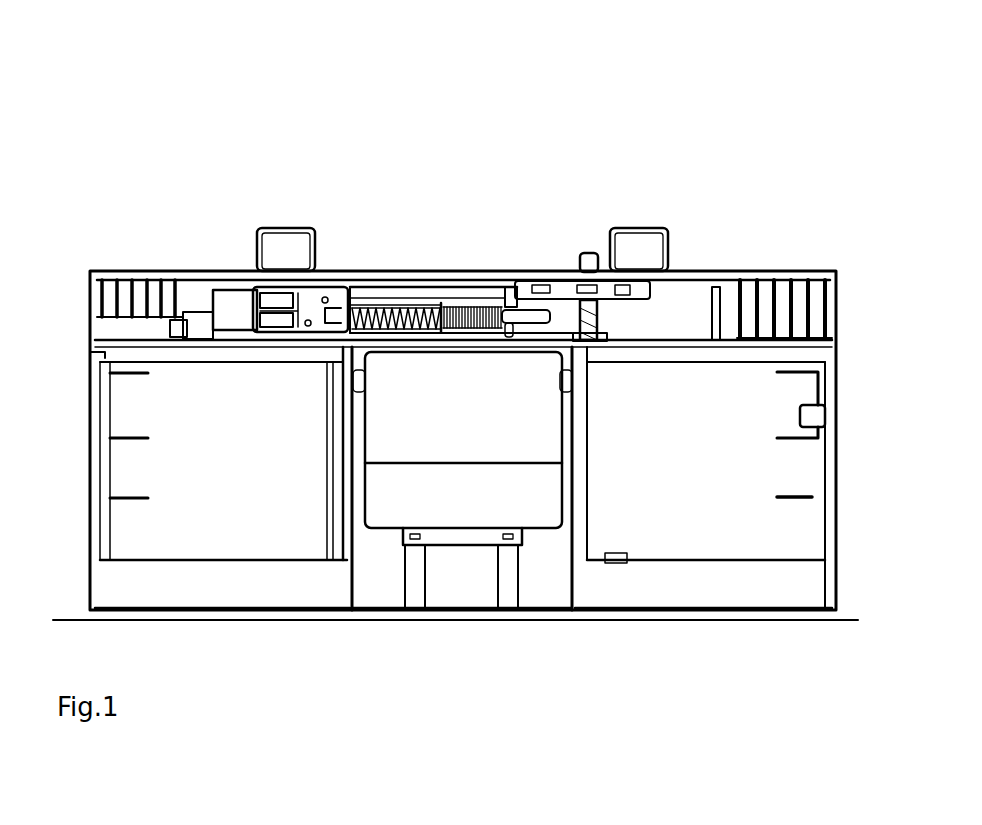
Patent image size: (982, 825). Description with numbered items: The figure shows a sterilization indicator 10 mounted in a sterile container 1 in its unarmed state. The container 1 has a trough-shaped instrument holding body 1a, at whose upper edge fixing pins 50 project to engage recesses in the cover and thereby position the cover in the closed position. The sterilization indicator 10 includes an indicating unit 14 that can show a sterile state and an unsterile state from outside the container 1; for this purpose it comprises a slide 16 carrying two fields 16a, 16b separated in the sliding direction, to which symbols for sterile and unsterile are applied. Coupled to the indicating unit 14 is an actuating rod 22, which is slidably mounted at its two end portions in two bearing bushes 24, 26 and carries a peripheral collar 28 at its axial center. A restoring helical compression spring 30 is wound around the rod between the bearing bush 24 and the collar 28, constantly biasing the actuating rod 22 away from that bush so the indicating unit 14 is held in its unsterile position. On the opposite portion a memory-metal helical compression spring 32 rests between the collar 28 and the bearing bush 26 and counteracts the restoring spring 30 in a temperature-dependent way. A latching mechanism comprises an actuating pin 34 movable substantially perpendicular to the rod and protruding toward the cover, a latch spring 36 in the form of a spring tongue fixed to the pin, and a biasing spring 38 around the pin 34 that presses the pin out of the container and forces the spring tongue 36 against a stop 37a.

The sterile container 1 is at (812, 206).
The instrument holding body 1a is at (793, 472).
The sterilization indicator 10 is at (248, 152).
The indicating unit 14 is at (253, 270).
The slide 16 is at (291, 289).
The first field 16a is at (288, 330).
The second field 16b is at (323, 333).
The actuating rod 22 is at (530, 325).
The bearing bush 24 is at (365, 284).
The bearing bush 26 is at (518, 285).
The peripheral collar 28 is at (446, 305).
The restoring helical compression spring 30 is at (391, 308).
The memory-metal helical compression spring 32 is at (469, 305).
The actuating pin 34 is at (590, 253).
The latch spring 36 is at (549, 281).
The stop 37a is at (631, 291).
The biasing spring 38 is at (598, 320).
The fixing pins 50 is at (287, 228).